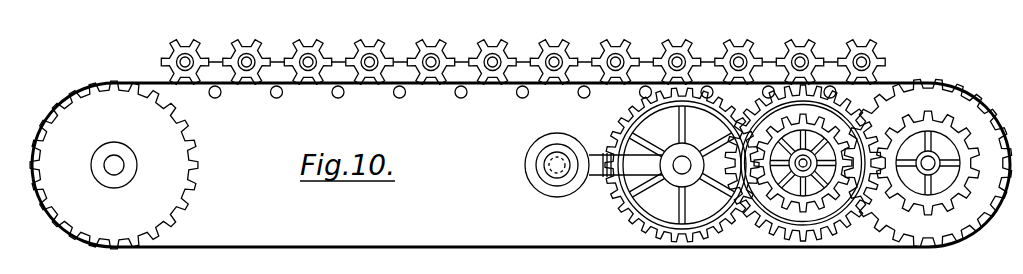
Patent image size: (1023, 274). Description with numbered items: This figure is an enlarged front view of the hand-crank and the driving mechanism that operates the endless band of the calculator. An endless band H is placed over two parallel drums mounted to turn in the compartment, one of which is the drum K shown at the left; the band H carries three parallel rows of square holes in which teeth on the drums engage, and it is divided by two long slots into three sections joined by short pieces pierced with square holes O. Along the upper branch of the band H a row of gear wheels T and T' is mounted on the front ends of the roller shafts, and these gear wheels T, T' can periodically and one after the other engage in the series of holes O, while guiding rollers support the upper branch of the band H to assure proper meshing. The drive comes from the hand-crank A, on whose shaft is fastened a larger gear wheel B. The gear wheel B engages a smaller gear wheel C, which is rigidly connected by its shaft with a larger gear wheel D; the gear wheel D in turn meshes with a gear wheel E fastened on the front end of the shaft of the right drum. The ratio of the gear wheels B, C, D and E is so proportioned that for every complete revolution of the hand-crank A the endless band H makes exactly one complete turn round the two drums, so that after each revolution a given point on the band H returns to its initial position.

The endless band H is at (476, 246).
The drum K is at (200, 162).
The gear wheel T is at (492, 49).
The gear wheel T' is at (554, 49).
The square holes O is at (333, 94).
The hand-crank A is at (566, 192).
The gear wheel B is at (614, 125).
The gear wheel D is at (765, 218).
The gear wheel C is at (838, 203).
The gear wheel E is at (938, 200).